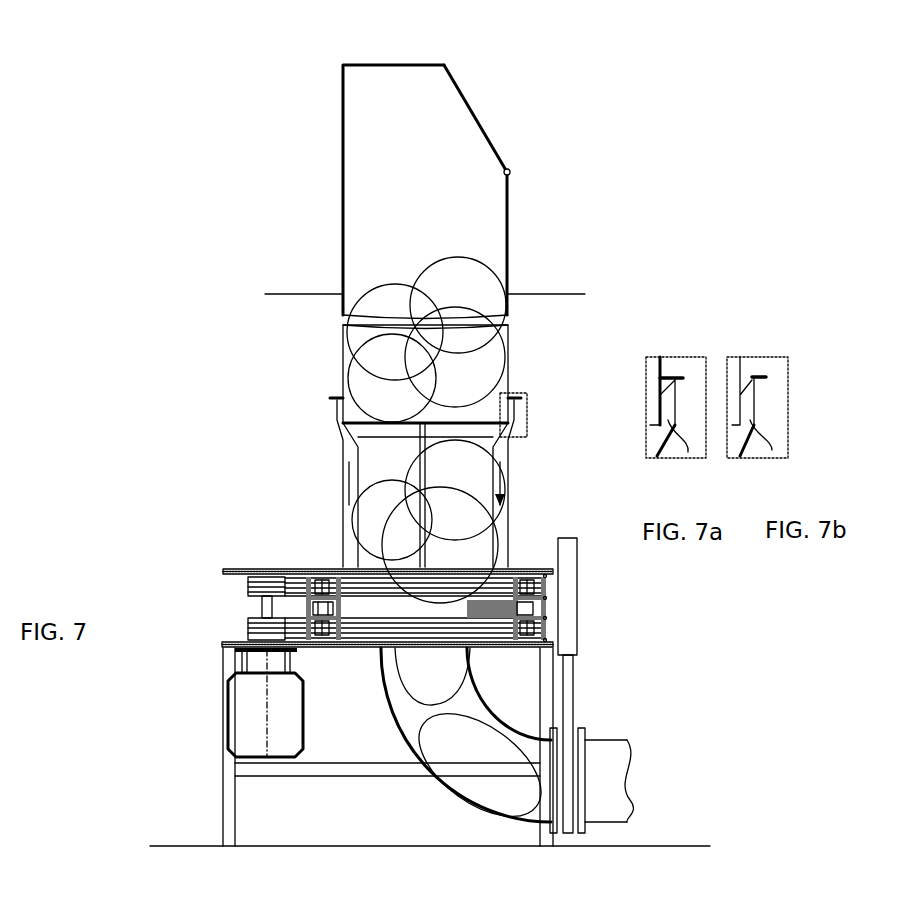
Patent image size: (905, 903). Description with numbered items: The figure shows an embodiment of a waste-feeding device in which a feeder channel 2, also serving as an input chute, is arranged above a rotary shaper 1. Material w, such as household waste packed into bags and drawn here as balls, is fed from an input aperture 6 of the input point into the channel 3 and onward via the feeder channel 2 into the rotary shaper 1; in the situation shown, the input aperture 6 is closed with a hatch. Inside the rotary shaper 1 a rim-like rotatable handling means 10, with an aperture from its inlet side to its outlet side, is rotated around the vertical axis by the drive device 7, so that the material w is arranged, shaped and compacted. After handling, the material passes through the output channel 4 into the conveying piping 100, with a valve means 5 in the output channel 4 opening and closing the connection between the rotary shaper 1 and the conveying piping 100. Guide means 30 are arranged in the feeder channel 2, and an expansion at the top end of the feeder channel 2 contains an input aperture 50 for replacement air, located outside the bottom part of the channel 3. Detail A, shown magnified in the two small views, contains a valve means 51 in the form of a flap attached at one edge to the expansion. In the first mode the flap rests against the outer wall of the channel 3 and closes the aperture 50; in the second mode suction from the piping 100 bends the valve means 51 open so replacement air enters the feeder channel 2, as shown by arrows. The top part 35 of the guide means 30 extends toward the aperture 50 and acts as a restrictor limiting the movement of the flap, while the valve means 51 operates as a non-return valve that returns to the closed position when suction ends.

In FIG. 7, the rotary shaper device 1 is at (262, 560).
In FIG. 7, the feeder channel 2 is at (340, 480).
In FIG. 7A, the feeder channel 2 is at (660, 456).
In FIG. 7B, the feeder channel 2 is at (744, 456).
In FIG. 7, the channel 3 is at (362, 278).
In FIG. 7A, the channel 3 is at (662, 380).
In FIG. 7, the output channel 4 is at (447, 797).
In FIG. 7, the valve means 5 is at (552, 807).
In FIG. 7, the input aperture 6 is at (452, 92).
In FIG. 7, the drive device 7 is at (240, 690).
In FIG. 7, the handling means 10 is at (483, 583).
In FIG. 7, the guide means 30 is at (345, 515).
In FIG. 7A, the guide means 30 is at (682, 450).
In FIG. 7B, the guide means 30 is at (765, 447).
In FIG. 7, the top part of the guide means 35 is at (672, 383).
In FIG. 7, the input aperture for replacement air 50 is at (337, 396).
In FIG. 7A, the input aperture for replacement air 50 is at (668, 360).
In FIG. 7B, the input aperture for replacement air 50 is at (747, 357).
In FIG. 7A, the valve means 51 is at (675, 383).
In FIG. 7B, the valve means 51 is at (755, 383).
In FIG. 7, the conveying piping 100 is at (592, 757).
In FIG. 7, the material W is at (375, 355).
In FIG. 7, the detail A is at (527, 437).
In FIG. 7A, the detail A is at (698, 460).
In FIG. 7B, the detail A is at (786, 458).